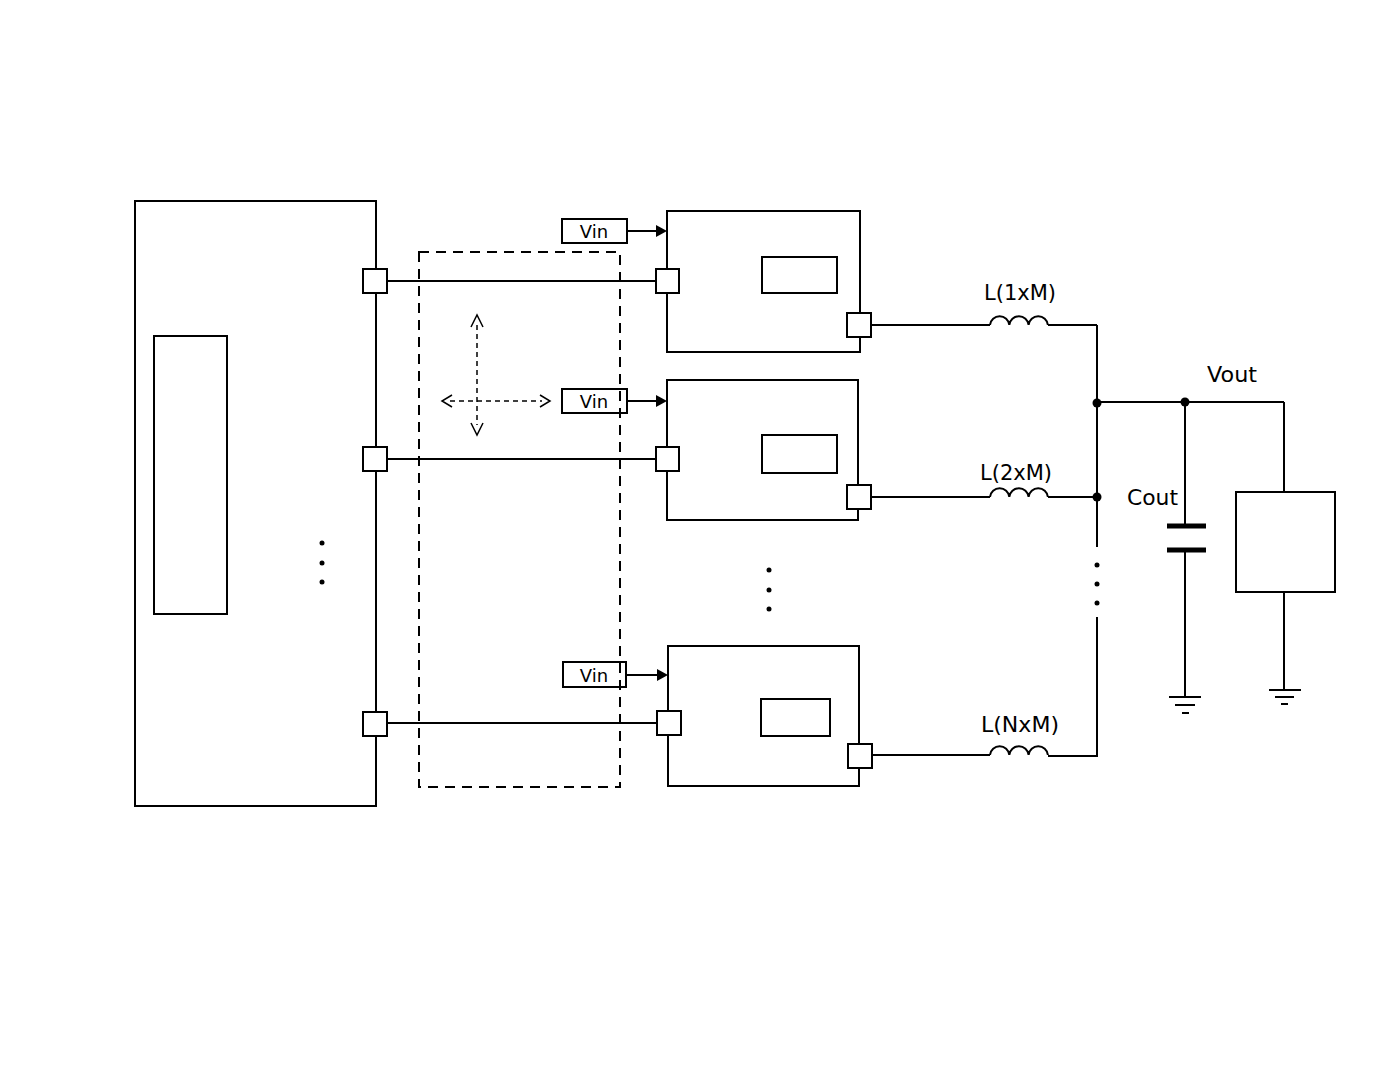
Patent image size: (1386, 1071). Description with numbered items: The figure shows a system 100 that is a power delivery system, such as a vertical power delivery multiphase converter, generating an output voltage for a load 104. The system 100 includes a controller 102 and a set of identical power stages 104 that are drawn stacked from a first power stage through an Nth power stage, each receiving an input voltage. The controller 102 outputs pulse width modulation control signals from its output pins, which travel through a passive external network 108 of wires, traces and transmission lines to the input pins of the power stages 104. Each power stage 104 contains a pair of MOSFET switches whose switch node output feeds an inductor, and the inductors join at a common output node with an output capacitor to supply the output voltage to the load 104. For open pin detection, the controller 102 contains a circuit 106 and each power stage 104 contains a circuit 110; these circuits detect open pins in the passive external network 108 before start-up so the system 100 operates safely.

The system 100 is at (648, 38).
The controller 102 is at (278, 242).
The power stages / load 104 is at (708, 249).
The circuit 106 is at (171, 488).
The passive external network 108 is at (450, 252).
The circuit 110 is at (799, 496).